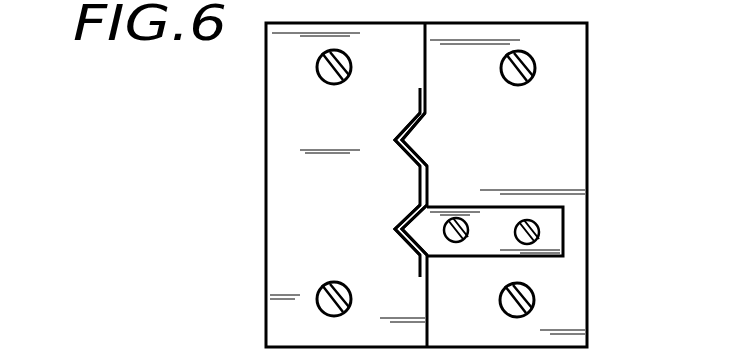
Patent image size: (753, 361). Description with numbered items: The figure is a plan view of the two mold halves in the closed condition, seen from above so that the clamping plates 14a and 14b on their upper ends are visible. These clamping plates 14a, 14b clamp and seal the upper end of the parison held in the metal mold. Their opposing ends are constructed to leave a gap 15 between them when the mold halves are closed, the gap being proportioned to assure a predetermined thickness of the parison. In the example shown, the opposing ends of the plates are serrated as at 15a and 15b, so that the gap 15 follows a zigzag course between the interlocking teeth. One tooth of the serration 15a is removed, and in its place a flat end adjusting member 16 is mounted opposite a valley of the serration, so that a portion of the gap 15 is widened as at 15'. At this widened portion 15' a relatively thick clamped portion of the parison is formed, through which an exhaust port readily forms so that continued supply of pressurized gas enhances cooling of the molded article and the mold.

The clamping plate 14a is at (588, 295).
The clamping plate 14b is at (272, 295).
The gap 15 is at (521, 185).
The serration 15a is at (405, 135).
The serration 15b is at (415, 121).
The widened portion 15' is at (308, 219).
The flat end adjusting member 16 is at (558, 230).